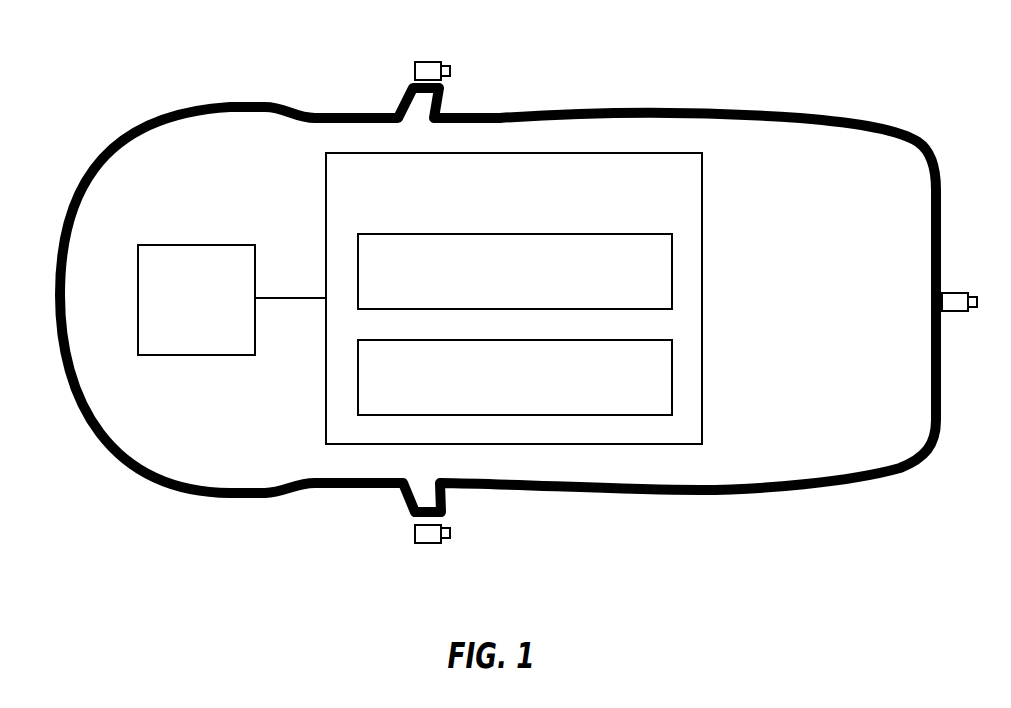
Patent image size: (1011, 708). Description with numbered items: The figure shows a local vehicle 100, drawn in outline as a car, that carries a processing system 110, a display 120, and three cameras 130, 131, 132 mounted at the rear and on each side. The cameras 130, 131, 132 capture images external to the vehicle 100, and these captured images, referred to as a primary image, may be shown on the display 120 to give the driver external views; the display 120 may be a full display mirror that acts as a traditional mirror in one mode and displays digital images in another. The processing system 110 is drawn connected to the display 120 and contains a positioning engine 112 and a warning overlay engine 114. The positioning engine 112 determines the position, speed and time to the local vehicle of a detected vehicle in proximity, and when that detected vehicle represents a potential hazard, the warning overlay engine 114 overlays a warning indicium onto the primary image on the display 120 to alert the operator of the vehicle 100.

The vehicle 100 is at (147, 122).
The processing system 110 is at (497, 186).
The positioning engine 112 is at (497, 282).
The warning overlay engine 114 is at (497, 388).
The display 120 is at (179, 312).
The camera 130 is at (953, 312).
The camera 131 is at (428, 543).
The camera 132 is at (430, 62).